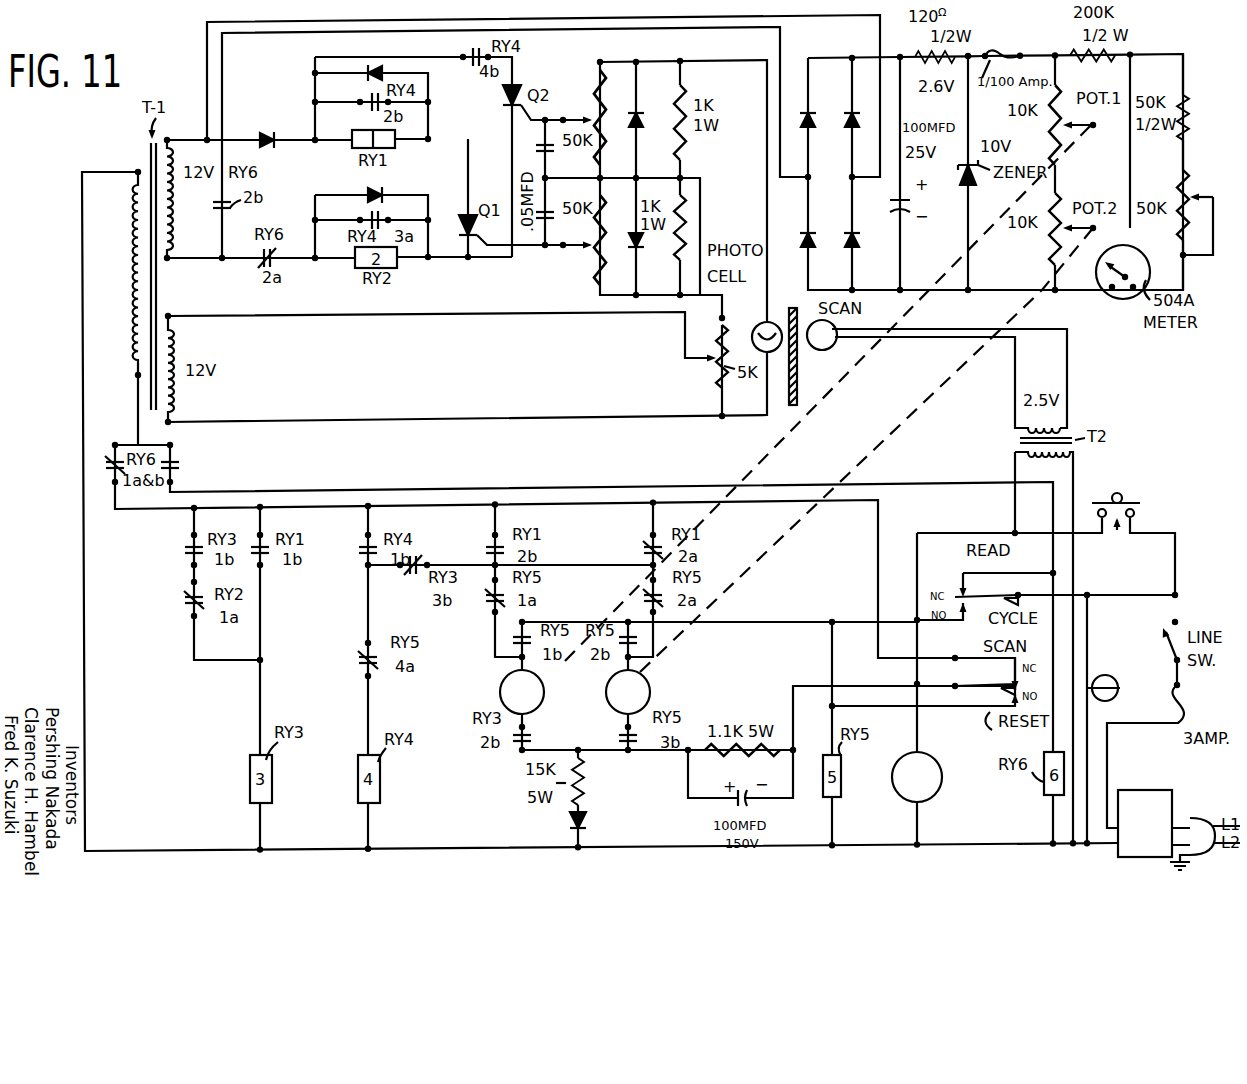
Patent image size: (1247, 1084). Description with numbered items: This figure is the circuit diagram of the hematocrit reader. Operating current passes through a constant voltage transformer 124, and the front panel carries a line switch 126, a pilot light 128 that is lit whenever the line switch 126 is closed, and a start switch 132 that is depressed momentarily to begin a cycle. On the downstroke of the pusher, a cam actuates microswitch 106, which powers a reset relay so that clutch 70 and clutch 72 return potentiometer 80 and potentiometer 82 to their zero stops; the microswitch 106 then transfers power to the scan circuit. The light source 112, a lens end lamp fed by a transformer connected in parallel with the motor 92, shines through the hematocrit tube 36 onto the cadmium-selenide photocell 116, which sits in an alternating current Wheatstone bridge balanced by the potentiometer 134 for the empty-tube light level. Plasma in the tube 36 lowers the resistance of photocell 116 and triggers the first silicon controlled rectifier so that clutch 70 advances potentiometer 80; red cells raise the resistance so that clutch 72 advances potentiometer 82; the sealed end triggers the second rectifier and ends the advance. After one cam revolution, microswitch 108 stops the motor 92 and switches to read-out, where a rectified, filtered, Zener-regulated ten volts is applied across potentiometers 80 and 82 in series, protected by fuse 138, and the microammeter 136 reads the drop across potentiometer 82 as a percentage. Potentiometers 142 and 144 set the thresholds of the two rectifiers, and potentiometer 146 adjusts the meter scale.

The hematocrit tube 36 is at (793, 410).
The clutch 70 is at (501, 703).
The clutch 72 is at (649, 692).
The potentiometer 80 is at (1076, 93).
The potentiometer 82 is at (1078, 190).
The motor 92 is at (905, 790).
The microswitch 106 is at (964, 653).
The microswitch 108 is at (955, 570).
The light source 112 is at (822, 351).
The photocell 116 is at (772, 312).
The constant voltage transformer 124 is at (1168, 790).
The line switch 126 is at (1193, 622).
The pilot light 128 is at (1105, 675).
The start switch 132 is at (1147, 497).
The potentiometer 134 is at (703, 370).
The microammeter 136 is at (1123, 282).
The fuse 138 is at (1006, 48).
The potentiometer 142 is at (574, 94).
The potentiometer 144 is at (586, 251).
The potentiometer 146 is at (1196, 176).